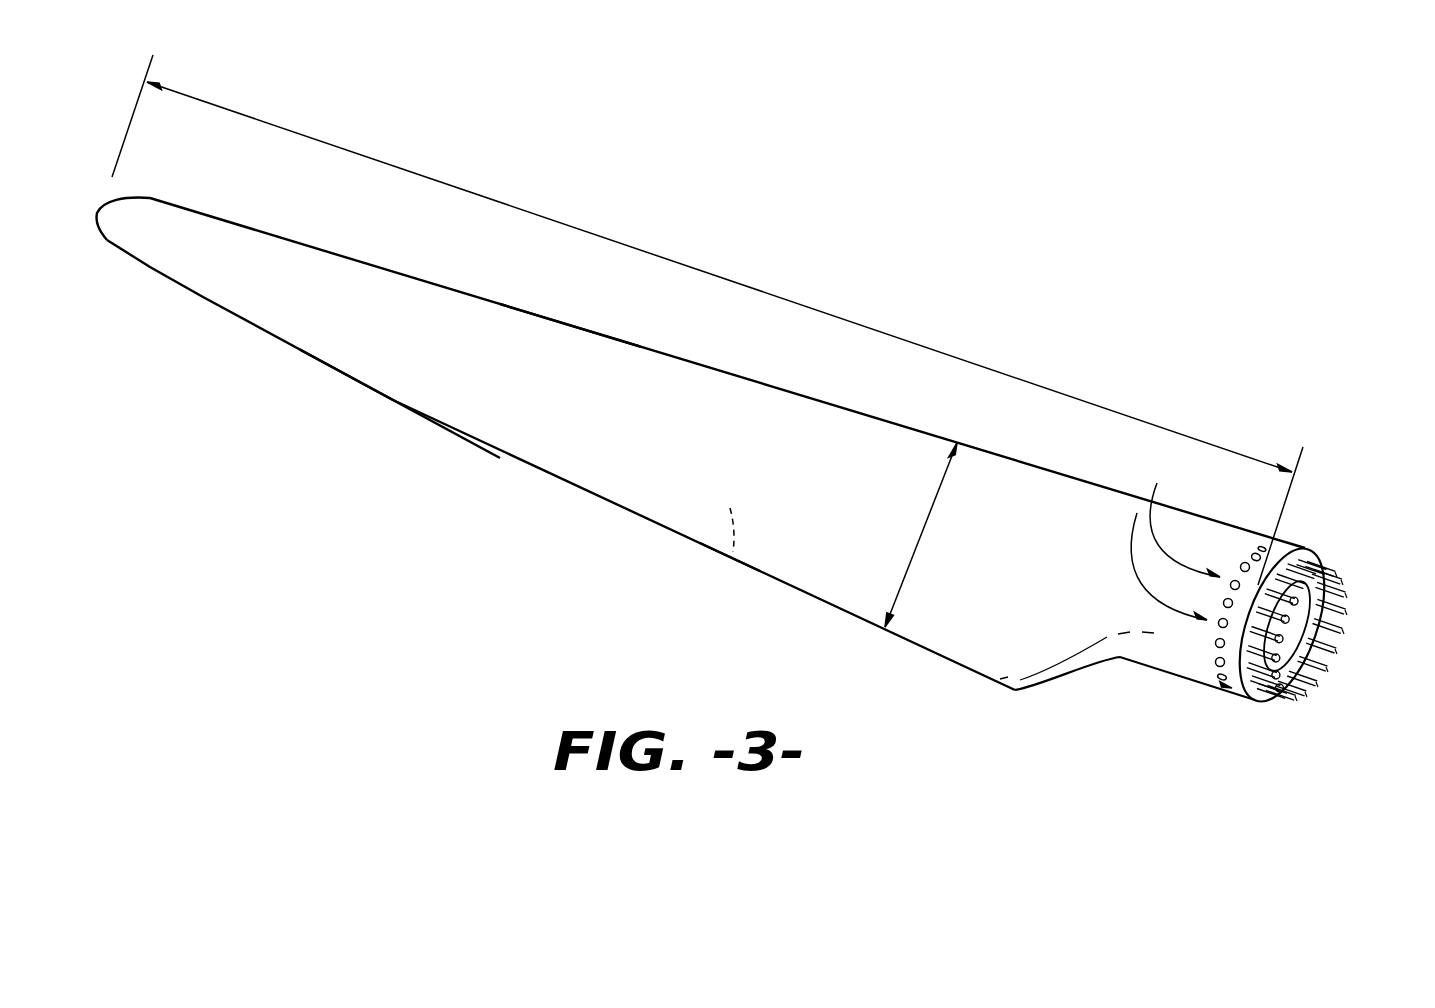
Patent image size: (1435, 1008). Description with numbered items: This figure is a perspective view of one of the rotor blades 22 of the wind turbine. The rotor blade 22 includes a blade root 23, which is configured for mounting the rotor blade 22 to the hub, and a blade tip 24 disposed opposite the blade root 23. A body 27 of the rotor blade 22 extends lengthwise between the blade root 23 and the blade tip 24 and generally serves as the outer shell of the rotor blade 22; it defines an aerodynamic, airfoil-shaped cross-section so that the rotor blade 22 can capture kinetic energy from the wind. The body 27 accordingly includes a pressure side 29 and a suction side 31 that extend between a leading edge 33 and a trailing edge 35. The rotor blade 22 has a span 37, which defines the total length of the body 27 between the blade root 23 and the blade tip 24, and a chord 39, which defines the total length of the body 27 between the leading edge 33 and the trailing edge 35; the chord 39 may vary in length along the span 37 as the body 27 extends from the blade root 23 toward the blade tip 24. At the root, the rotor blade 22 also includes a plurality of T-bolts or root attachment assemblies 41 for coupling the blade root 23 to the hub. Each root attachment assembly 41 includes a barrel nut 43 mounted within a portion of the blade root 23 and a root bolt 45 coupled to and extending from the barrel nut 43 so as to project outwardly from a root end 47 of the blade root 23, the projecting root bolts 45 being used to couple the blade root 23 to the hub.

The rotor blade 22 is at (735, 414).
The blade root 23 is at (1207, 670).
The blade tip 24 is at (95, 212).
The body 27 is at (553, 357).
The pressure side 29 is at (728, 562).
The suction side 31 is at (433, 377).
The leading edge 33 is at (780, 387).
The trailing edge 35 is at (560, 482).
The span 37 is at (758, 288).
The chord 39 is at (917, 547).
The root attachment assembly 41 is at (1175, 534).
The barrel nut 43 is at (1253, 557).
The root bolt 45 is at (1347, 587).
The root end 47 is at (1268, 700).